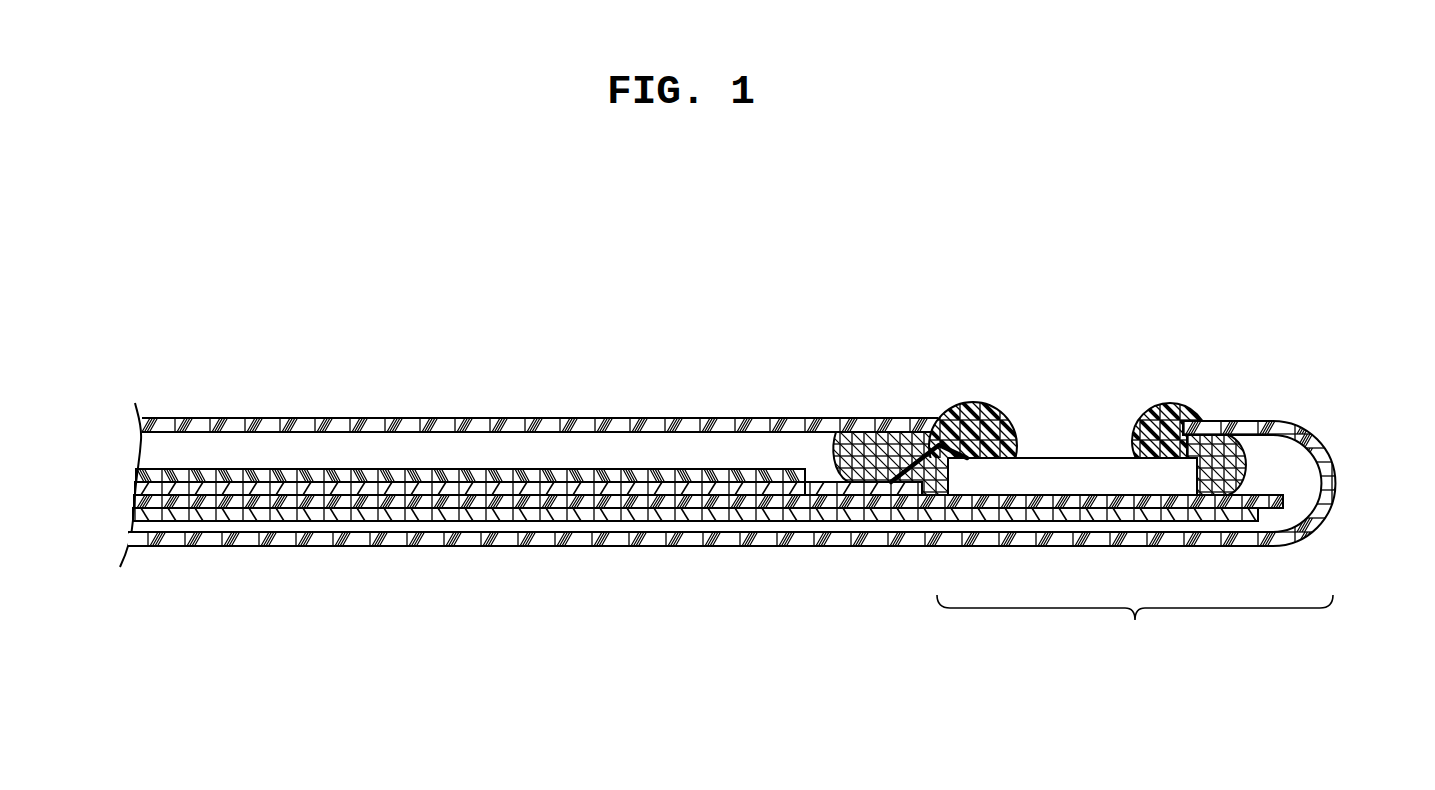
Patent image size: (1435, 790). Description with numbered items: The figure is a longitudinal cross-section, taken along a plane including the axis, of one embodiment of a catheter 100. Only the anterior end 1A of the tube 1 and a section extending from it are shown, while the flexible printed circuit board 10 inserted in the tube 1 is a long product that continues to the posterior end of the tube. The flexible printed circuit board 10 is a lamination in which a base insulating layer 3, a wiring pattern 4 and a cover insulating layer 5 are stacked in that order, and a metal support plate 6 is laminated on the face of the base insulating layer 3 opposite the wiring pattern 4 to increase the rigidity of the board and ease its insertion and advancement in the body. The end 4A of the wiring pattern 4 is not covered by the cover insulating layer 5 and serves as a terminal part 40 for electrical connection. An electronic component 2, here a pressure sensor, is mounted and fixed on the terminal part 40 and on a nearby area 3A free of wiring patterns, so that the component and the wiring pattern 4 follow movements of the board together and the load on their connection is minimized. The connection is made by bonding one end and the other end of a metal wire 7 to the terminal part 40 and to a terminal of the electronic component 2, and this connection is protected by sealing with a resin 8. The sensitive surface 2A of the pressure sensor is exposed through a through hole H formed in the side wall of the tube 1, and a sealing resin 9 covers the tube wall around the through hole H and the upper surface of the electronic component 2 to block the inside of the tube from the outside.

The catheter 100 is at (773, 431).
The tube 1 is at (685, 540).
The anterior end 1A is at (1135, 630).
The electronic component 2 is at (1189, 470).
The sensitive surface 2A is at (1077, 457).
The base insulating layer 3 is at (302, 499).
The nearby area free of wiring patterns 3A is at (1273, 497).
The wiring pattern 4 is at (607, 484).
The end of wiring pattern 4A is at (865, 492).
The cover insulating layer 5 is at (236, 471).
The metal support plate 6 is at (534, 512).
The metal wire 7 is at (949, 420).
The resin 8 is at (914, 447).
The sealing resin 9 is at (998, 407).
The flexible printed circuit board 10 is at (456, 470).
The terminal part 40 is at (836, 458).
The through hole H is at (1159, 402).